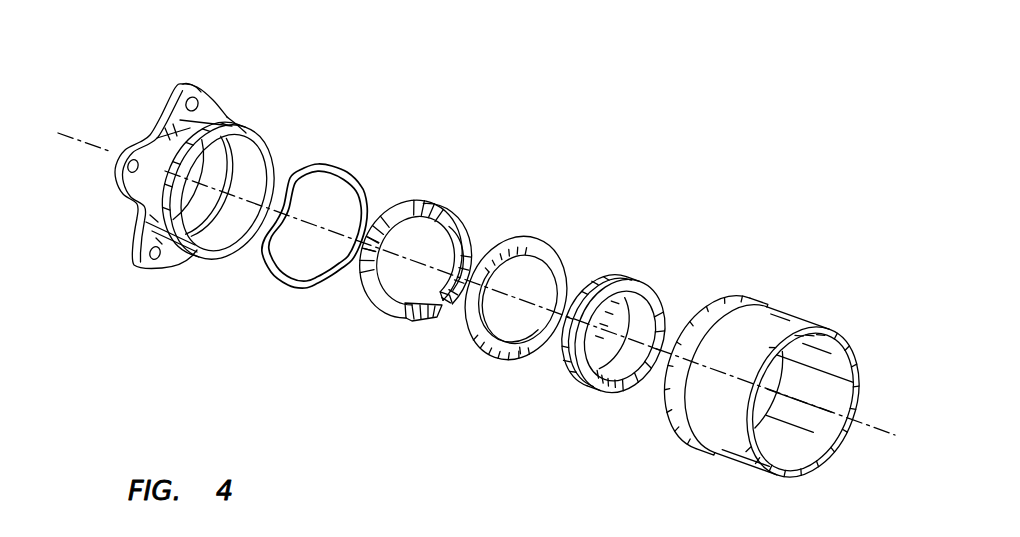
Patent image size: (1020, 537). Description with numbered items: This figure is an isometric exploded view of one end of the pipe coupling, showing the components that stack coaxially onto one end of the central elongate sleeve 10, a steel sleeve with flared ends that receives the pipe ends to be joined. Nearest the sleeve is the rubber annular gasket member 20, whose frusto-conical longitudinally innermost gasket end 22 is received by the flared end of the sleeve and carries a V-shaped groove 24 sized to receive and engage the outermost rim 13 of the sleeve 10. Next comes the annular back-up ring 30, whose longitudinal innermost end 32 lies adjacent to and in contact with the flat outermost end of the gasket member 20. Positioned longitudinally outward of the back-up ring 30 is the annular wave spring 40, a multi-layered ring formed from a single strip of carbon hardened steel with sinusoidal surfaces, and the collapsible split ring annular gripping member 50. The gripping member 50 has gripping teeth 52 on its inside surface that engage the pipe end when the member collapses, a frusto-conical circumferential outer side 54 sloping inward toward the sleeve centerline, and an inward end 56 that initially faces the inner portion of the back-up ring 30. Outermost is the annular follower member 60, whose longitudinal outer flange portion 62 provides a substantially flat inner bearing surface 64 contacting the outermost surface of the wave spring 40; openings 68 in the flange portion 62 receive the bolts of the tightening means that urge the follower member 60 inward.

The central elongate sleeve 10 is at (776, 303).
The outermost rim 13 is at (672, 415).
The annular gasket member 20 is at (640, 262).
The longitudinally innermost gasket end 22 is at (610, 313).
The V-shaped groove 24 is at (605, 387).
The annular back-up ring 30 is at (550, 240).
The longitudinal innermost end 32 is at (508, 362).
The annular wave spring 40 is at (345, 162).
The collapsible split ring annular gripping member 50 is at (440, 198).
The gripping teeth 52 is at (463, 238).
The frusto-conical circumferential outer side 54 is at (362, 298).
The inward end 56 is at (420, 322).
The annular follower member 60 is at (250, 122).
The longitudinal outer flange portion 62 is at (207, 102).
The inner bearing surface 64 is at (233, 167).
The opening 68 is at (129, 171).